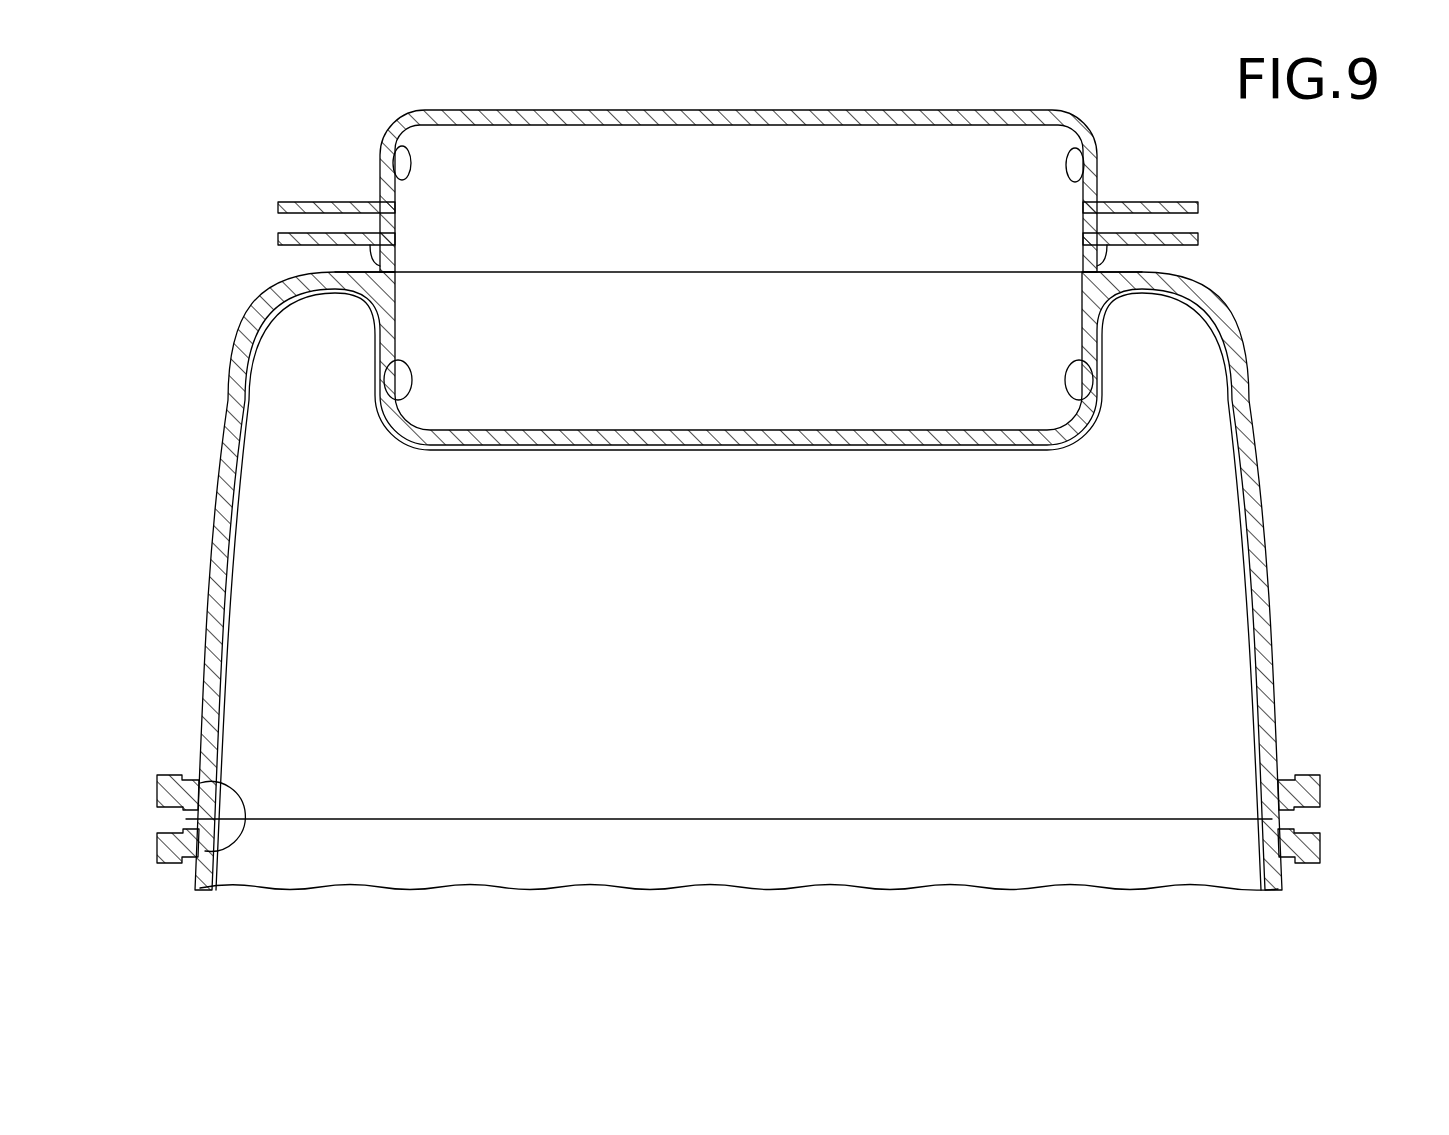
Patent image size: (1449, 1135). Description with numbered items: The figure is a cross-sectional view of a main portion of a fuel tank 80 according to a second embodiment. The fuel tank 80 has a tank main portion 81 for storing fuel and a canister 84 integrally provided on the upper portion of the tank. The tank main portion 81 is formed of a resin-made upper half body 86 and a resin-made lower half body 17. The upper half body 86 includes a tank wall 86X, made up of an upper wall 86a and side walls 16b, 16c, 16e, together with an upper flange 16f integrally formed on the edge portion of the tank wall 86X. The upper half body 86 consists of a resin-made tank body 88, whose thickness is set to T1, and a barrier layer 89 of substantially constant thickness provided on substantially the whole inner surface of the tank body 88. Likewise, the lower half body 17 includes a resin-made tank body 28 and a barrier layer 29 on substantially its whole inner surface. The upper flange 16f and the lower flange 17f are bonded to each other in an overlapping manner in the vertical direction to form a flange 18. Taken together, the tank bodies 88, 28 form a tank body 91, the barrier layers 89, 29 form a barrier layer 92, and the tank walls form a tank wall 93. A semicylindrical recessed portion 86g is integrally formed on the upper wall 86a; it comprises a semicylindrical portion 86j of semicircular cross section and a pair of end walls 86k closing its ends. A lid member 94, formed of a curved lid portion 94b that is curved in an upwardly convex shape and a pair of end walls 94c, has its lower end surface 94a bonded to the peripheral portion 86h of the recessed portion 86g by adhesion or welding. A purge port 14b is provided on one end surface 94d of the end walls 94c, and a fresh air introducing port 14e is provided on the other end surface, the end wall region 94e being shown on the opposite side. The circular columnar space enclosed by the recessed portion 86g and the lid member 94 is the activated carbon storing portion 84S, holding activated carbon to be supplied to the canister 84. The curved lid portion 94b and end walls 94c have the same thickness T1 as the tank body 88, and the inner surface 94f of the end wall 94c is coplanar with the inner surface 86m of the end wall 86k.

The fuel tank 80 is at (205, 222).
The tank main portion 81 is at (228, 393).
The canister 84 is at (403, 111).
The activated carbon storing portion 84S is at (500, 178).
The upper half body 86 is at (213, 570).
The upper wall 86a is at (380, 272).
The recessed portion 86g is at (795, 362).
The peripheral portion 86h is at (1140, 272).
The semicylindrical portion 86j is at (720, 347).
The end wall 86k is at (385, 388).
The inner surface 86m is at (390, 398).
The tank wall 86X is at (217, 520).
The tank body 88 is at (210, 612).
The barrier layer 89 is at (215, 710).
The tank body 91 is at (190, 598).
The barrier layer 92 is at (125, 700).
The tank wall 93 is at (225, 432).
The lid member 94 is at (995, 108).
The lower end surface 94a is at (1118, 298).
The curved lid portion 94b is at (923, 185).
The end wall 94c is at (377, 163).
The end surface 94d is at (1100, 188).
The left flange joint portion 94e is at (375, 201).
The inner surface 94f is at (378, 166).
The purge port 14b is at (1175, 202).
The fresh air introducing port 14e is at (283, 201).
The side wall 16b is at (1264, 540).
The side wall 16c is at (222, 458).
The side wall 16e is at (1170, 640).
The upper flange 16f is at (1310, 792).
The lower half body 17 is at (192, 882).
The lower flange 17f is at (1310, 845).
The flange 18 is at (1408, 773).
The tank body 28 is at (193, 878).
The barrier layer 29 is at (210, 803).
The thickness T1 is at (598, 163).